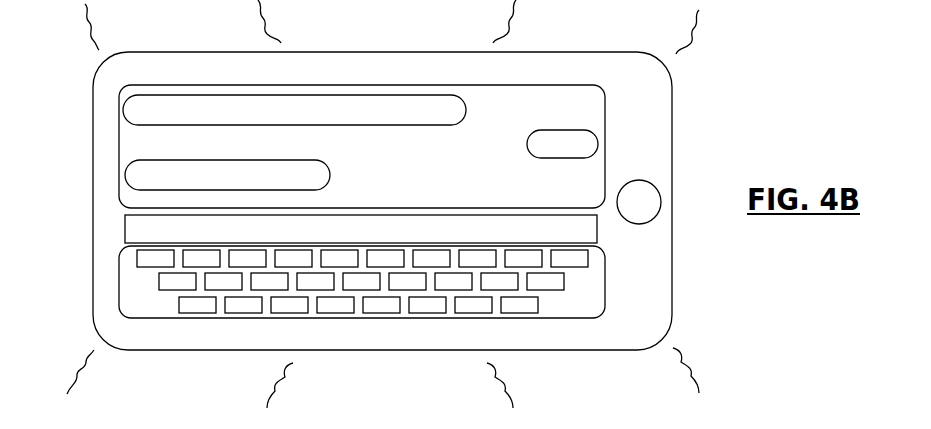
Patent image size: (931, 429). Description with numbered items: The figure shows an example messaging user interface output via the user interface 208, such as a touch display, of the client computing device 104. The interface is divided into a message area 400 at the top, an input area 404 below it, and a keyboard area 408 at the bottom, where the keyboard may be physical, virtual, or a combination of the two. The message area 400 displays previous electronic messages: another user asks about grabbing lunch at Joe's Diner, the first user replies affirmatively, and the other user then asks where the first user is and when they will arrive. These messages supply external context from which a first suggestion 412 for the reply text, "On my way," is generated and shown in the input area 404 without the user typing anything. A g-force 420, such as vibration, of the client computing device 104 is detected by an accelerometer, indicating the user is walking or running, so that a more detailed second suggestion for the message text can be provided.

The client computing device 104 is at (573, 52).
The user interface 208 is at (186, 84).
The message area 400 is at (586, 104).
The input area 404 is at (146, 228).
The keyboard area 408 is at (584, 304).
The first suggestion 412 is at (582, 229).
The g-force 420 is at (704, 31).